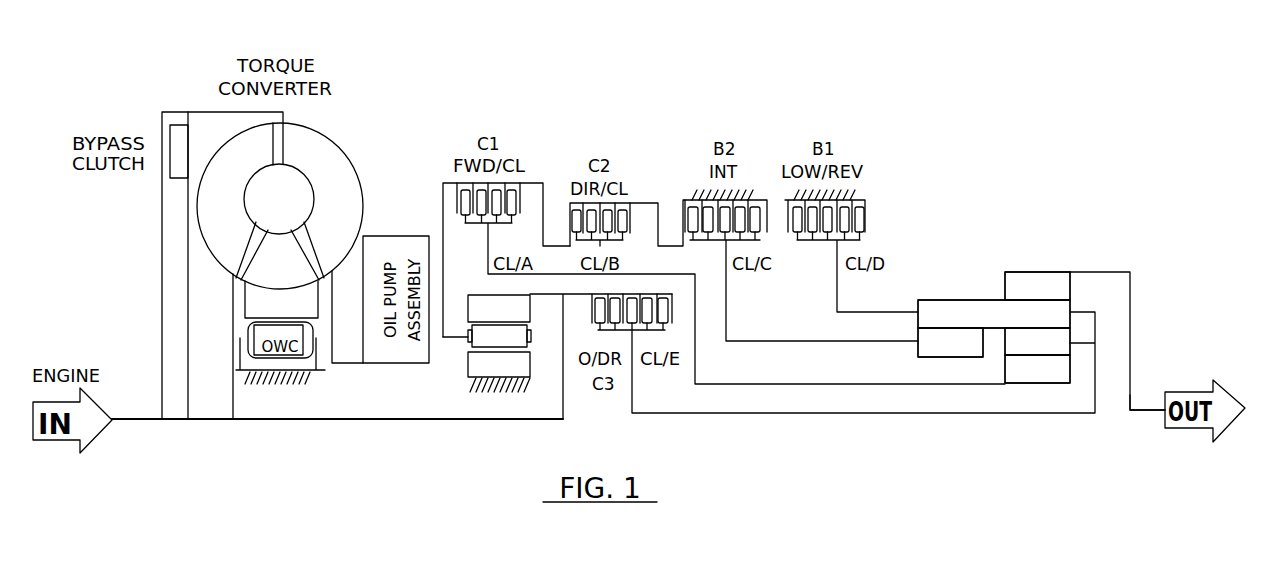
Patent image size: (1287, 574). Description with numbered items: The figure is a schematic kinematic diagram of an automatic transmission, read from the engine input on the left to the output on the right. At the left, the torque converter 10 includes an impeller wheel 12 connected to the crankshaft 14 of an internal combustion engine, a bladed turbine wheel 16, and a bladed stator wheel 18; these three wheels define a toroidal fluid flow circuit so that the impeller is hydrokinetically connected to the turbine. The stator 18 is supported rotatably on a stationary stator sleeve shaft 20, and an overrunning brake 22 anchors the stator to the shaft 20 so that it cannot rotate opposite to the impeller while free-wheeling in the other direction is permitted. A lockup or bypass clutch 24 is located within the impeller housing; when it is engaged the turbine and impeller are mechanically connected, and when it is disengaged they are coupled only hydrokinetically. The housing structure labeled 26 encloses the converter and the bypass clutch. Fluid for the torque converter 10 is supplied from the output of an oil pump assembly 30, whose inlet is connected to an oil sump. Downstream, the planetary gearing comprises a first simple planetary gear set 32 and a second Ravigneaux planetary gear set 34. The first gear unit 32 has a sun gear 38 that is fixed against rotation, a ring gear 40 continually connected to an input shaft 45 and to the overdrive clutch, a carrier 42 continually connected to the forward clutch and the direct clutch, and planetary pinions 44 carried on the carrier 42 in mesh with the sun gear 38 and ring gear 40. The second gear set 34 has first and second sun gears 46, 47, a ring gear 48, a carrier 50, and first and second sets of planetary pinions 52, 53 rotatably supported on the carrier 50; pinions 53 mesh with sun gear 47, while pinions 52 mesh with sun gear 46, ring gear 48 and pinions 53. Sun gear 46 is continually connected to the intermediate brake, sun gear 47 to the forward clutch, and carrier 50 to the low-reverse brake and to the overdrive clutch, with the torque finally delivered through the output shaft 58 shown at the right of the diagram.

The torque converter 10 is at (410, 72).
The impeller wheel 12 is at (350, 214).
The crankshaft 14 is at (123, 421).
The bladed turbine wheel 16 is at (234, 219).
The bladed stator wheel 18 is at (292, 276).
The stationary stator sleeve shaft 20 is at (325, 372).
The overrunning brake 22 is at (248, 330).
The bypass clutch 24 is at (168, 176).
The torque converter housing 26 is at (187, 112).
The oil pump assembly 30 is at (382, 236).
The first simple planetary gear set 32 is at (452, 357).
The second Ravigneaux planetary gear set 34 is at (1064, 233).
The sun gear 38 is at (465, 368).
The ring gear 40 is at (482, 295).
The carrier 42 is at (442, 228).
The planetary pinions 44 is at (531, 347).
The input shaft 45 is at (385, 419).
The first sun gear 46 is at (918, 350).
The second sun gear 47 is at (1005, 372).
The ring gear 48 is at (1004, 272).
The carrier 50 is at (1093, 343).
The first set of planetary pinions 52 is at (968, 300).
The second set of planetary pinions 53 is at (1072, 352).
The output shaft 58 is at (1150, 408).